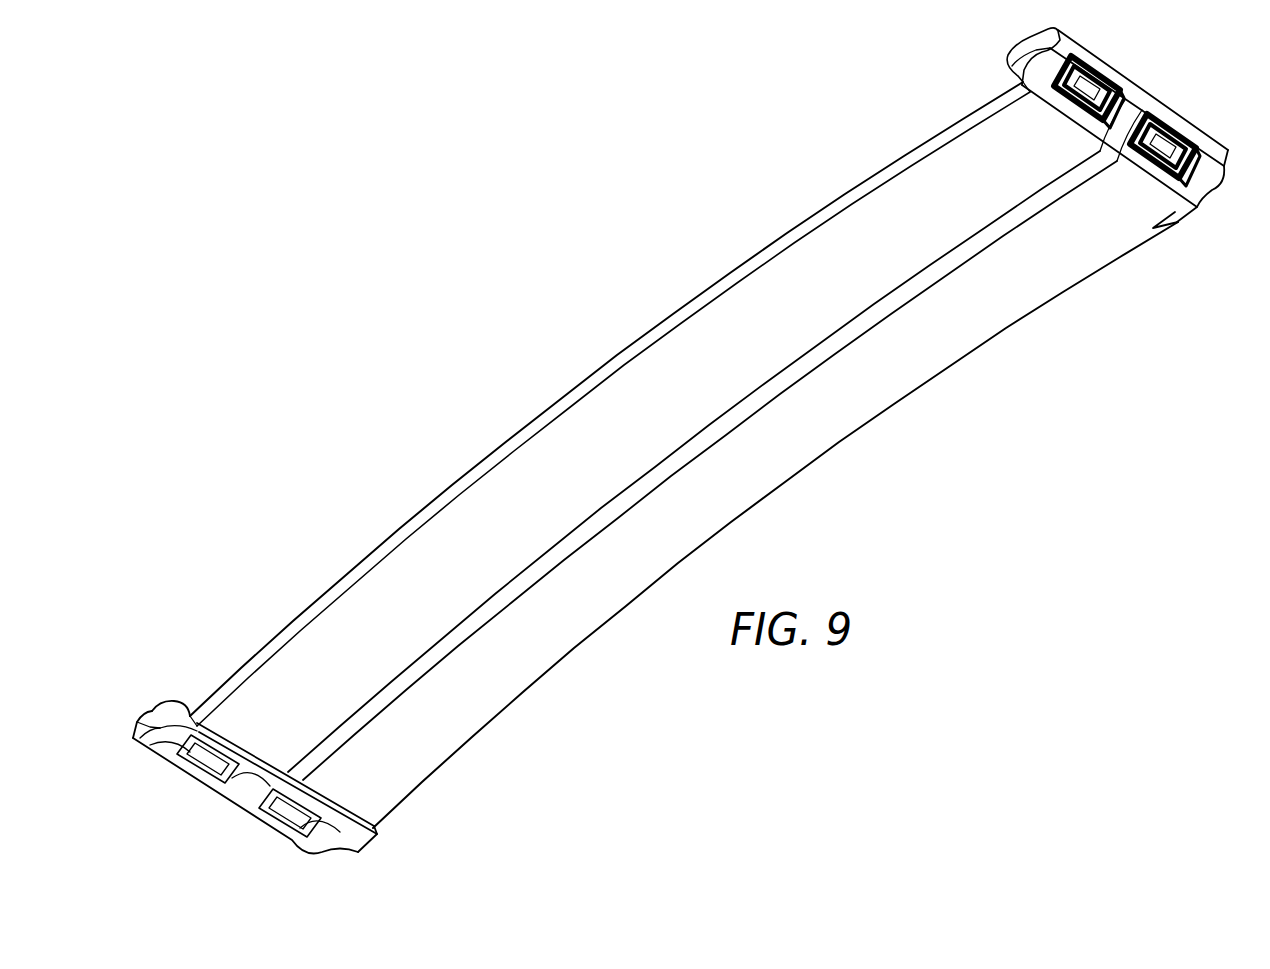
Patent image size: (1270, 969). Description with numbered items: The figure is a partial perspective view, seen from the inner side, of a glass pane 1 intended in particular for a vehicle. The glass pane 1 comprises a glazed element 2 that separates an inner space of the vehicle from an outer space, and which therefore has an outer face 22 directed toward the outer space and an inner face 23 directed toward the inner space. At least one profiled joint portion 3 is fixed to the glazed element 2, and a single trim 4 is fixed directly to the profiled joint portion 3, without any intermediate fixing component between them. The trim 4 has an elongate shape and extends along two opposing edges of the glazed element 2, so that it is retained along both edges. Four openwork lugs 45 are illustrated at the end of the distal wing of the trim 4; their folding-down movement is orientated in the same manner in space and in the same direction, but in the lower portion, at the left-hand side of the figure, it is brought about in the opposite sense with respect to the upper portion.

The glass pane 1 is at (556, 257).
The glazed element 2 is at (320, 596).
The profiled joint portion 3 is at (170, 710).
The trim 4 is at (148, 716).
The outer face 22 is at (942, 133).
The inner face 23 is at (1057, 287).
The openwork lug 45 is at (1105, 82).